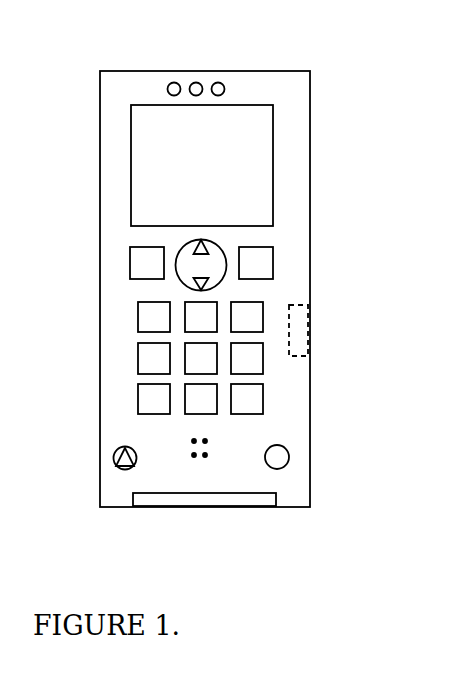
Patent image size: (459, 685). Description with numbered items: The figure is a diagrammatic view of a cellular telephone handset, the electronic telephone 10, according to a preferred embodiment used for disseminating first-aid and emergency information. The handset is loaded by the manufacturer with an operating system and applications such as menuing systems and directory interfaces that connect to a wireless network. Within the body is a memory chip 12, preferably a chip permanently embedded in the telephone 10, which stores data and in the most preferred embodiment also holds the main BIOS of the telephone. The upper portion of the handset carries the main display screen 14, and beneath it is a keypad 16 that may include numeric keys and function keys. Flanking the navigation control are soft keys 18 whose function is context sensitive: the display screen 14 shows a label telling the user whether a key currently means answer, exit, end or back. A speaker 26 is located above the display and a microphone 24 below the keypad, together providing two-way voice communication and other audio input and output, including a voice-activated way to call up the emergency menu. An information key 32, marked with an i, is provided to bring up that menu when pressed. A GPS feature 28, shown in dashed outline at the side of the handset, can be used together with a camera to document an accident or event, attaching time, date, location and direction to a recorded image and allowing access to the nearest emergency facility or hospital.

The electronic telephone 10 is at (418, 173).
The memory chip 12 is at (225, 498).
The main display screen 14 is at (258, 183).
The keypad 16 is at (132, 318).
The soft keys 18 is at (117, 258).
The microphone 24 is at (221, 458).
The speaker 26 is at (233, 84).
The GPS feature 28 is at (300, 345).
The information key 32 is at (294, 453).